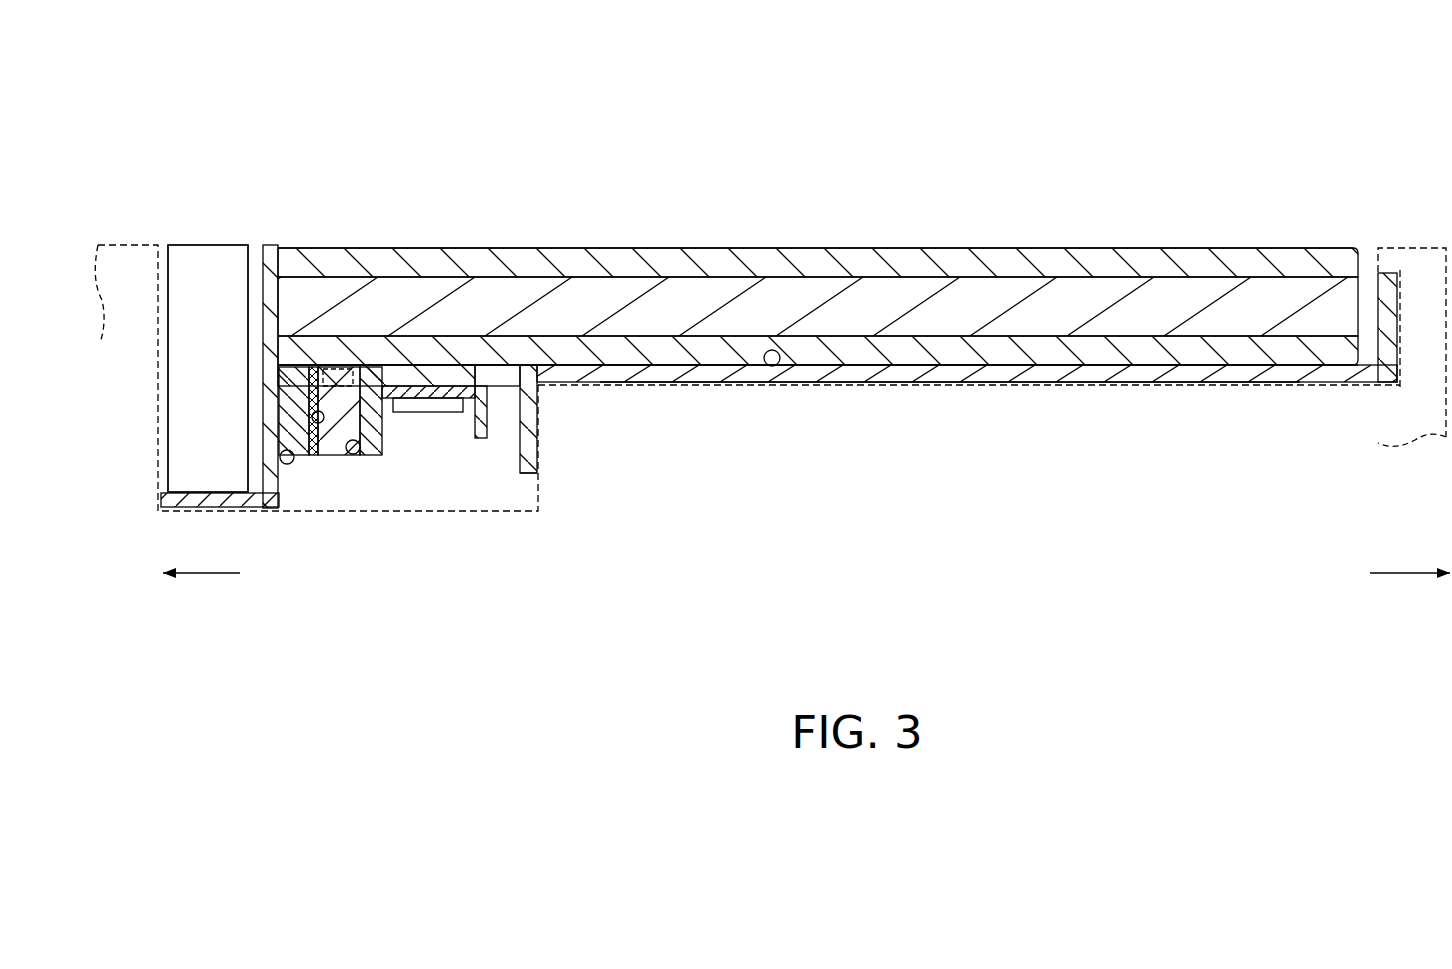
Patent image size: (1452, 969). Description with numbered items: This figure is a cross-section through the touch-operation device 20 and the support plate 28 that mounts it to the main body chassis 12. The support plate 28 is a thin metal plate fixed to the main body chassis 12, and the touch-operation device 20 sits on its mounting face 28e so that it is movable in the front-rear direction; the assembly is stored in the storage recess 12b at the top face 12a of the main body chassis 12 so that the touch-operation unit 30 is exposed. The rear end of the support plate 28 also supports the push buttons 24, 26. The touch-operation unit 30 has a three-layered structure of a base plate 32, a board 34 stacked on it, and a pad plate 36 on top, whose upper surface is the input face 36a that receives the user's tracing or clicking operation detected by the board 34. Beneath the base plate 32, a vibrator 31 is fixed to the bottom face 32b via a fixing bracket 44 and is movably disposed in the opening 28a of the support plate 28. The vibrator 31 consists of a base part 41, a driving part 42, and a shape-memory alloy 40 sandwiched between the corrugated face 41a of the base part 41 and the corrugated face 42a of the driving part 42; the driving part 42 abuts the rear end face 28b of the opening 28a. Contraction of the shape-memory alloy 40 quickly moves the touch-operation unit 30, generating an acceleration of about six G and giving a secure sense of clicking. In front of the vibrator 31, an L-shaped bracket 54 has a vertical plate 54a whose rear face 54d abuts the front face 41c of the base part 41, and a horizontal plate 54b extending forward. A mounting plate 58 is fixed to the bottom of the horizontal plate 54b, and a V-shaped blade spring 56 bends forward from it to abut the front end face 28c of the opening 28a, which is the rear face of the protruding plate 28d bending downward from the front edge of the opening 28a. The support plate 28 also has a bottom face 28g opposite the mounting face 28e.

The touch-operation device 20 is at (140, 101).
The main body chassis 12 is at (138, 238).
The top face 12a is at (1416, 246).
The storage recess 12b is at (1020, 388).
The push button 24 is at (205, 256).
The push button 26 is at (208, 368).
The support plate 28 is at (848, 392).
The opening 28a is at (428, 453).
The rear end face 28b is at (284, 463).
The front end face 28c is at (520, 471).
The protruding plate 28d is at (530, 436).
The mounting face 28e is at (772, 366).
The bottom face 28g is at (935, 382).
The touch-operation unit 30 is at (1187, 165).
The base plate 32 is at (1168, 350).
The bottom face 32b is at (1097, 366).
The board 34 is at (1090, 300).
The pad plate 36 is at (1013, 262).
The input face 36a is at (860, 248).
The vibrator 31 is at (400, 575).
The shape-memory alloy 40 is at (333, 456).
The base part 41 is at (353, 454).
The corrugated face 41a is at (283, 403).
The front face 41c is at (375, 380).
The driving part 42 is at (313, 456).
The corrugated face 42a is at (320, 426).
The fixing bracket 44 is at (338, 368).
The bracket 54 is at (410, 192).
The vertical plate 54a is at (407, 397).
The horizontal plate 54b is at (445, 397).
The rear face 54d is at (378, 458).
The blade spring 56 is at (505, 405).
The mounting plate 58 is at (431, 398).